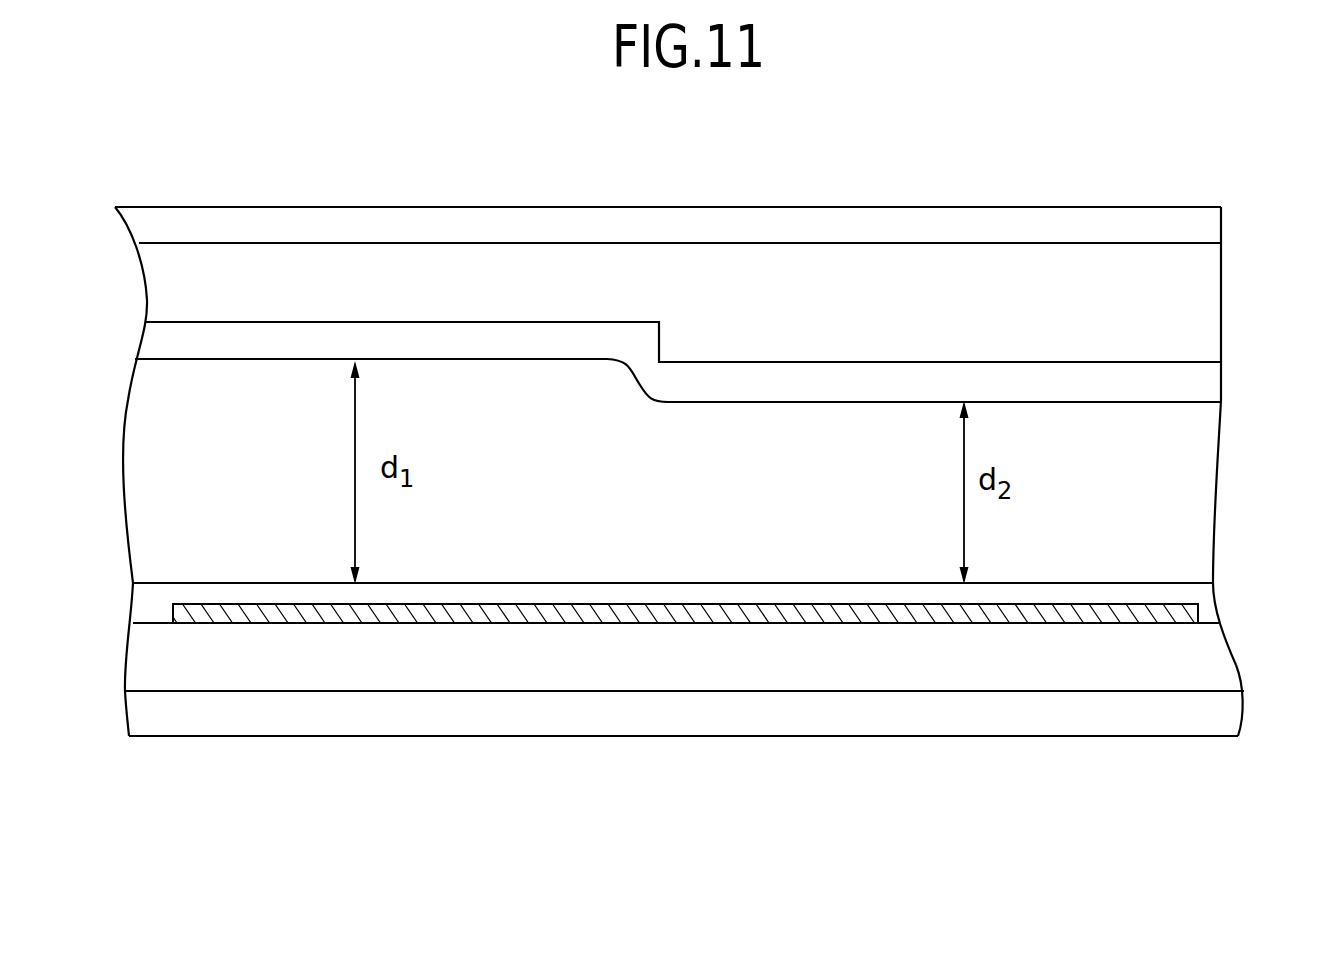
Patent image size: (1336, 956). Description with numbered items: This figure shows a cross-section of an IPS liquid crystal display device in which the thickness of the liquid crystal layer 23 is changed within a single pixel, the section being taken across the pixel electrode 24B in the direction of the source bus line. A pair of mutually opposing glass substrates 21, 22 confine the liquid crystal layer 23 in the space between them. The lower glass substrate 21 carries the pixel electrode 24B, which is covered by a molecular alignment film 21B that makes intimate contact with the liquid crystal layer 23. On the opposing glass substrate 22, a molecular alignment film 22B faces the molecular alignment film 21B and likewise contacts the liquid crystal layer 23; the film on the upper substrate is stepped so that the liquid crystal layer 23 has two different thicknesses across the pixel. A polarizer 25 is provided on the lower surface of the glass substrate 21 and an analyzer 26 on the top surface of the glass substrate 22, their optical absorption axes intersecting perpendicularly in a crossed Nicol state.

The analyzer 26 is at (1200, 231).
The glass substrate 22 is at (1203, 301).
The molecular alignment film 22B is at (1203, 382).
The liquid crystal layer 23 is at (1248, 405).
The molecular alignment film 21B is at (1208, 607).
The pixel electrode 24B is at (753, 623).
The glass substrate 21 is at (1210, 666).
The polarizer 25 is at (1105, 717).